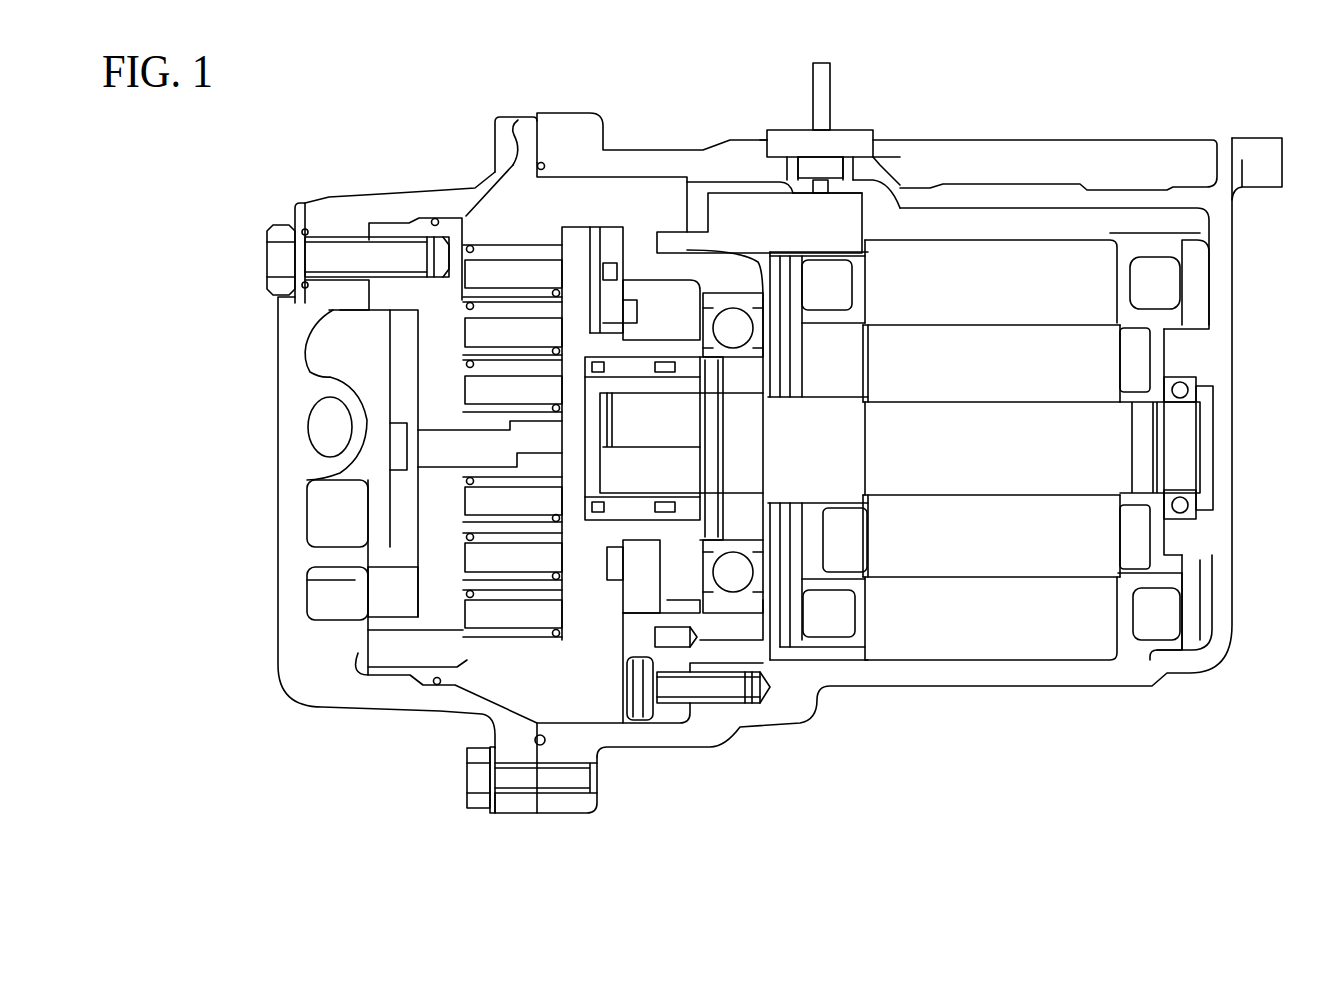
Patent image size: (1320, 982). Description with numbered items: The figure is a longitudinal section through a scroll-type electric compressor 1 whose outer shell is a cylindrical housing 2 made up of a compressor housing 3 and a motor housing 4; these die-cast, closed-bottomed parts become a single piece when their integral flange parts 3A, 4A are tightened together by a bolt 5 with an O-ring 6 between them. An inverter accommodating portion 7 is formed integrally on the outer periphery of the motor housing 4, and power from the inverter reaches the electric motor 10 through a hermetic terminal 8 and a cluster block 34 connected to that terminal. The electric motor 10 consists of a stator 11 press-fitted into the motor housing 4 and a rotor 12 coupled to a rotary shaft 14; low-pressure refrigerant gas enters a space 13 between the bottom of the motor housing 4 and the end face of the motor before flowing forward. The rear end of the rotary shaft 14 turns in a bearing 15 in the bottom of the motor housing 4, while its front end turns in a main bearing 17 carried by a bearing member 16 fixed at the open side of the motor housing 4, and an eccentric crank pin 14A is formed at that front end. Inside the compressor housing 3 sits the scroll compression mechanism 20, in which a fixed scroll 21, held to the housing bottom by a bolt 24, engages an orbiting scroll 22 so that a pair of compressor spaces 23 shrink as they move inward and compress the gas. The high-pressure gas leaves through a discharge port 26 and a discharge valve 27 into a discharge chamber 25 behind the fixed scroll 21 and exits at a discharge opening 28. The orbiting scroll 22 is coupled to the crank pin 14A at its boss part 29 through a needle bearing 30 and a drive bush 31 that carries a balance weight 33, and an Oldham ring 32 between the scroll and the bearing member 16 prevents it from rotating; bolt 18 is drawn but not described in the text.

The electric compressor 1 is at (596, 90).
The housing 2 is at (916, 700).
The compressor housing 3 is at (303, 636).
The flange part 3A is at (521, 812).
The motor housing 4 is at (1228, 548).
The flange part 4A is at (562, 812).
The bolt 5 is at (480, 772).
The O-ring 6 is at (535, 741).
The inverter accommodating portion 7 is at (1067, 145).
The hermetic terminal 8 is at (843, 140).
The electric motor 10 is at (1021, 655).
The stator 11 is at (1064, 292).
The rotor 12 is at (928, 382).
The space 13 is at (1198, 330).
The rotary shaft 14 is at (1027, 487).
The crank pin 14A is at (672, 418).
The bearing 15 is at (1196, 500).
The bearing member 16 is at (753, 630).
The main bearing 17 is at (765, 353).
The bolt 18 is at (713, 693).
The scroll compression mechanism 20 is at (480, 195).
The fixed scroll 21 is at (419, 297).
The orbiting scroll 22 is at (577, 268).
The compressor spaces 23 is at (512, 441).
The bolt 24 is at (323, 250).
The discharge chamber 25 is at (330, 350).
The discharge port 26 is at (443, 460).
The discharge valve 27 is at (407, 450).
The discharge opening 28 is at (330, 432).
The boss part 29 is at (640, 343).
The needle bearing 30 is at (613, 520).
The drive bush 31 is at (687, 477).
The Oldham ring 32 is at (613, 263).
The balance weight 33 is at (672, 558).
The cluster block 34 is at (732, 212).